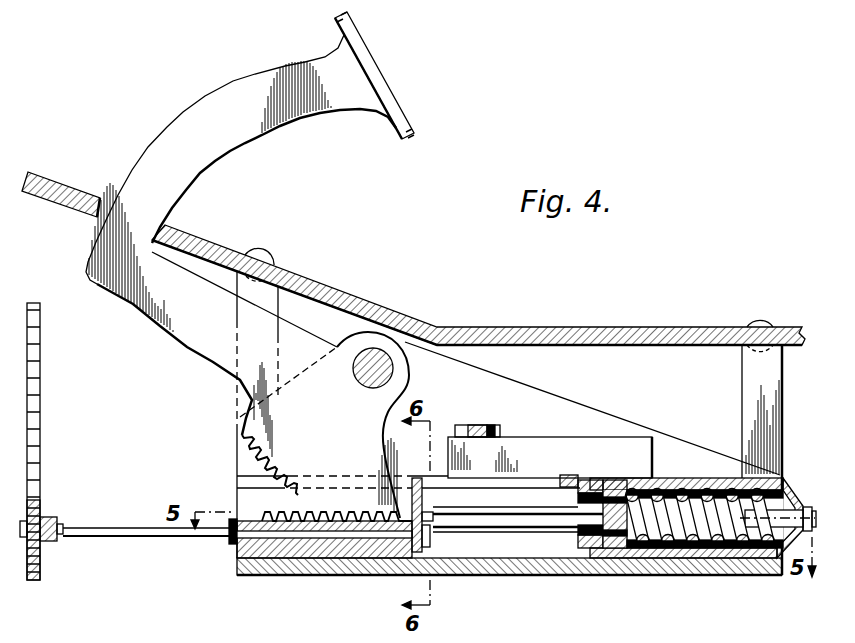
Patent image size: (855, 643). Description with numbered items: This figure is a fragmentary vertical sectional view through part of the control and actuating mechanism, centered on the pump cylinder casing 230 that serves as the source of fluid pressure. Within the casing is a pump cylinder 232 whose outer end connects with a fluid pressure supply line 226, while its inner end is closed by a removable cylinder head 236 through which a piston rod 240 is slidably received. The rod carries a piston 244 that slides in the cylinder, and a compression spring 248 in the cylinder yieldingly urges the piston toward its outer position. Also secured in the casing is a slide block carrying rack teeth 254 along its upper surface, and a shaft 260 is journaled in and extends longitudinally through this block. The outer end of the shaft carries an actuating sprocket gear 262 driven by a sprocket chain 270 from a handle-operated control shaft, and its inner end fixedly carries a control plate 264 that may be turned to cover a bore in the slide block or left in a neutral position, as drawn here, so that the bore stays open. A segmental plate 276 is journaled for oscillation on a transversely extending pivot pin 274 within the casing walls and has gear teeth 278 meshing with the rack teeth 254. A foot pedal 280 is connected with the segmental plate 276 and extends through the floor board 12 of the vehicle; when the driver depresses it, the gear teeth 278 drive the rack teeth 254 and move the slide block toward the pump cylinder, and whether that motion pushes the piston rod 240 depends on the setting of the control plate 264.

The floor board 12 is at (338, 292).
The fluid pressure supply line 226 is at (800, 502).
The pump cylinder casing 230 is at (558, 395).
The pump cylinder 232 is at (717, 477).
The cylinder head 236 is at (570, 483).
The piston rod 240 is at (495, 511).
The piston 244 is at (617, 493).
The compression spring 248 is at (670, 480).
The rack teeth 254 is at (253, 518).
The shaft 260 is at (153, 538).
The actuating sprocket gear 262 is at (45, 522).
The control plate 264 is at (423, 496).
The sprocket chain 270 is at (42, 406).
The pivot pin 274 is at (366, 370).
The segmental plate 276 is at (280, 385).
The gear teeth 278 is at (272, 470).
The foot pedal 280 is at (228, 150).